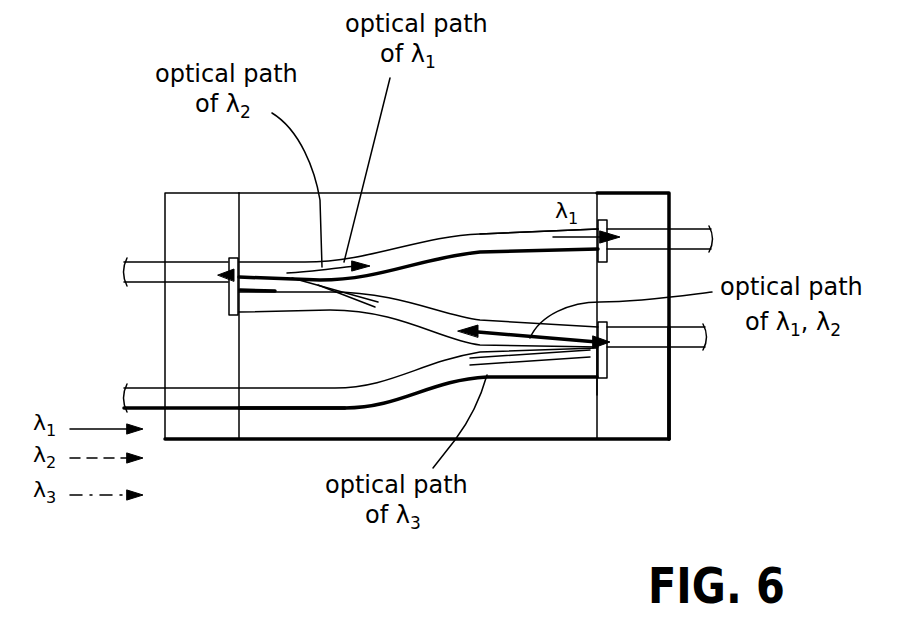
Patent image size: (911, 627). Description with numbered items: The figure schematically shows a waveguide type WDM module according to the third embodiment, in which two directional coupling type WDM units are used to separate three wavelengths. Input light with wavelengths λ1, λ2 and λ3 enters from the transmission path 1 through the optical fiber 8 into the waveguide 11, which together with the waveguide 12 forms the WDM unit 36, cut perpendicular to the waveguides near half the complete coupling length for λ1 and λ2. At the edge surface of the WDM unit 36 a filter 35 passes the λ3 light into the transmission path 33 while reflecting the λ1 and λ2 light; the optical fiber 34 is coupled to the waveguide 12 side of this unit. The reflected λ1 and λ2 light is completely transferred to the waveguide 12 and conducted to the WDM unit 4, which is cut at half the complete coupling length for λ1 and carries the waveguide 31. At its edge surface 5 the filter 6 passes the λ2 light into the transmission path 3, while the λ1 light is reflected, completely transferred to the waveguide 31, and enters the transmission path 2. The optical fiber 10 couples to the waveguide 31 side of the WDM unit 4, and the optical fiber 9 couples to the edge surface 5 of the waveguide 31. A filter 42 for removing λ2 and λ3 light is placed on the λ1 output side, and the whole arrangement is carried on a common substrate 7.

The transmission path 1 is at (110, 393).
The transmission path 2 is at (713, 240).
The transmission path 3 is at (115, 272).
The directional coupling type WDM unit 4 is at (272, 262).
The edge surface 5 is at (590, 388).
The filter 6 is at (228, 311).
The waveguide substrate 7 is at (404, 203).
The optical fiber 8 is at (193, 408).
The optical fiber 9 is at (641, 228).
The optical fiber 10 is at (180, 253).
The waveguide 11 is at (273, 408).
The waveguide 12 is at (418, 302).
The waveguide 31 is at (512, 227).
The transmission path 33 is at (710, 342).
The optical fiber 34 is at (662, 350).
The filter 35 is at (607, 367).
The WDM unit 36 is at (533, 377).
The filter 42 is at (603, 220).